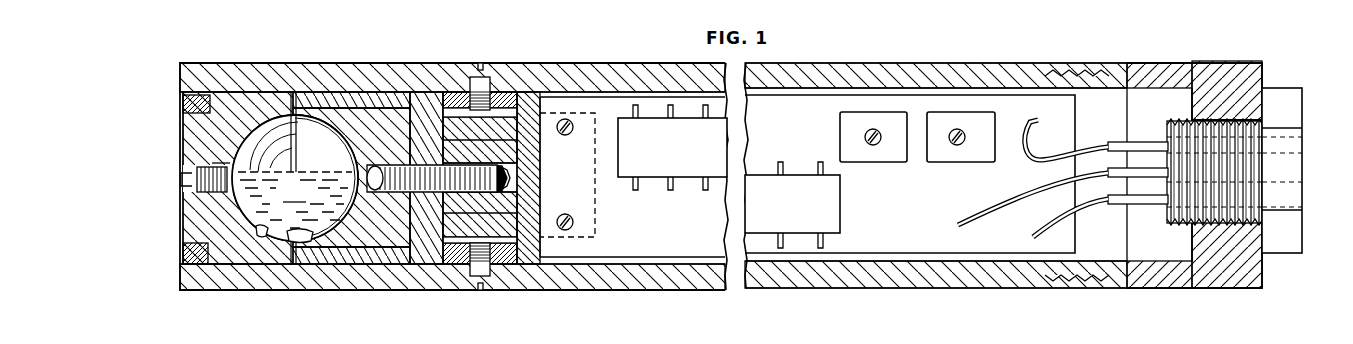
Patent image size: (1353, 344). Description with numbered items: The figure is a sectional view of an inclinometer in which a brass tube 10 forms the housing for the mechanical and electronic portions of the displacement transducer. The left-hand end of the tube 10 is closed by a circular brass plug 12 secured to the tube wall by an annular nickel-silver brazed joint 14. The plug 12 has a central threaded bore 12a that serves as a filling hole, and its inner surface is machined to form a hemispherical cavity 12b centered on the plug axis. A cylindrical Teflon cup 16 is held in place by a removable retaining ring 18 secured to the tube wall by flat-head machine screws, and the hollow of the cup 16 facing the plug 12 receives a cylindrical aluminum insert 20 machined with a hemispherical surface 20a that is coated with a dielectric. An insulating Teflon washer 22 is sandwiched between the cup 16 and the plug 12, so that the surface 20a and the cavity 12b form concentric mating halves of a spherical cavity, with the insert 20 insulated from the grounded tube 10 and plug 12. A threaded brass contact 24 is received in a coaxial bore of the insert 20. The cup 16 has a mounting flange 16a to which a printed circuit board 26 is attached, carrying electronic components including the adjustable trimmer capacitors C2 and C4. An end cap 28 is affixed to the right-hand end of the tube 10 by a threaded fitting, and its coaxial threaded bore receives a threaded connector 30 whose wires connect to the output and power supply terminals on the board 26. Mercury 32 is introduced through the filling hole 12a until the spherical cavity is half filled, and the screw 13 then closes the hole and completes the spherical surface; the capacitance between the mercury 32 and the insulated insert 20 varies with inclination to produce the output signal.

The brass tube 10 is at (557, 277).
The brass plug 12 is at (245, 110).
The central threaded bore 12a is at (212, 163).
The hemispherical cavity 12b is at (263, 232).
The screw 13 is at (190, 188).
The brazed joint 14 is at (183, 257).
The Teflon cup 16 is at (338, 102).
The mounting flange 16a is at (596, 237).
The retaining ring 18 is at (462, 98).
The aluminum insert 20 is at (368, 238).
The hemispherical surface 20a is at (288, 237).
The insulating washer 22 is at (293, 92).
The threaded brass contact 24 is at (483, 173).
The printed circuit board 26 is at (710, 220).
The end cap 28 is at (1215, 78).
The threaded connector 30 is at (1293, 95).
The mercury medium 32 is at (295, 178).
The trimmer capacitor C2 is at (873, 148).
The trimmer capacitor C4 is at (961, 148).